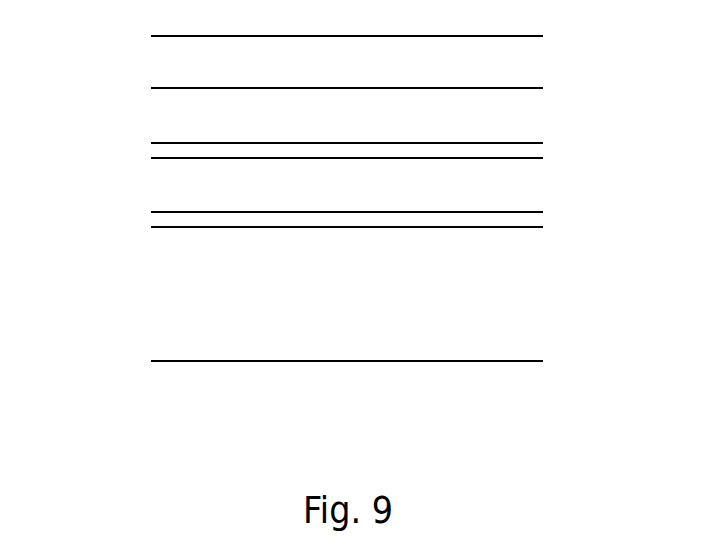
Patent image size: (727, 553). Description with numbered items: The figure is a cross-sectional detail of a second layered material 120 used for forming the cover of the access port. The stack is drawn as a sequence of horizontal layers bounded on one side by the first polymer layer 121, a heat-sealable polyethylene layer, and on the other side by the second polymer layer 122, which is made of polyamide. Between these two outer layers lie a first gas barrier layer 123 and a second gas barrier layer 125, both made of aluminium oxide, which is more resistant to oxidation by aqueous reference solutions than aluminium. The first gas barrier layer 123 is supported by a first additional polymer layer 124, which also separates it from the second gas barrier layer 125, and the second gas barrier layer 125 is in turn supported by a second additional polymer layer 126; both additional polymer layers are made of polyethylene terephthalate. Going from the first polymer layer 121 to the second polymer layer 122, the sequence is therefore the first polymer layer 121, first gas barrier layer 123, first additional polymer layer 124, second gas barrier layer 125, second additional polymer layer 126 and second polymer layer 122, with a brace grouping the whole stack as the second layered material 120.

The second layered material 120 is at (610, 28).
The first polymer layer 121 is at (367, 302).
The second polymer layer 122 is at (367, 73).
The first gas barrier layer 123 is at (182, 219).
The first additional polymer layer 124 is at (367, 200).
The second gas barrier layer 125 is at (182, 152).
The second additional polymer layer 126 is at (367, 129).